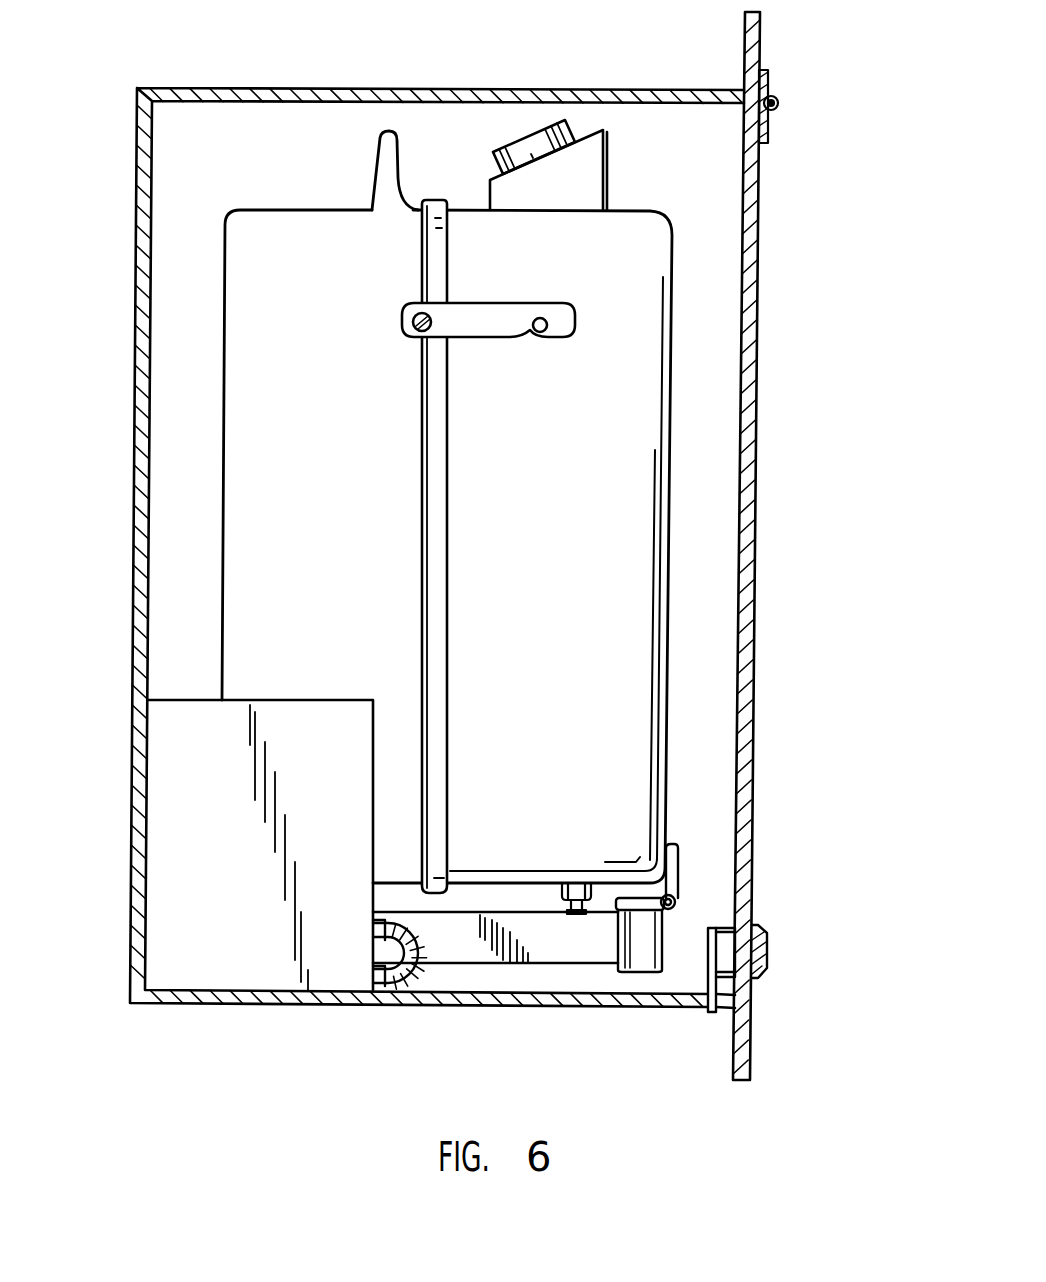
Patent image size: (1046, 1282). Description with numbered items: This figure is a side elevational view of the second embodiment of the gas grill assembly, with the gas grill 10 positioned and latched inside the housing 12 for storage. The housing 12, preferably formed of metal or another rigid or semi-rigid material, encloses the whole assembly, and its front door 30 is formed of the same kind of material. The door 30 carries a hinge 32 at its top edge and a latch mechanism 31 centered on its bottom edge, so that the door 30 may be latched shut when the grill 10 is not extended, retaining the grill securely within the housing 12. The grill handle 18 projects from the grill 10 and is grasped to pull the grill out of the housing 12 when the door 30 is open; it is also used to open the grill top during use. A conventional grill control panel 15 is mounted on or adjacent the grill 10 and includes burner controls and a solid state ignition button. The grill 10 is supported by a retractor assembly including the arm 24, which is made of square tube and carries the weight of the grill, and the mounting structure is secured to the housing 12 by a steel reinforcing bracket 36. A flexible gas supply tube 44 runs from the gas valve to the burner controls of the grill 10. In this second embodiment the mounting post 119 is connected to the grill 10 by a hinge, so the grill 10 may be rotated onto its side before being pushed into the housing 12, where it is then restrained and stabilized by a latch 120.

The gas grill 10 is at (357, 456).
The housing 12 is at (305, 88).
The grill control panel 15 is at (580, 178).
The grill handle 18 is at (387, 159).
The arm 24 is at (530, 938).
The front door 30 is at (758, 547).
The latch mechanism 31 is at (768, 948).
The hinge 32 is at (778, 103).
The reinforcing bracket 36 is at (190, 808).
The flexible gas supply tube 44 is at (417, 972).
The mounting post 119 is at (676, 901).
The latch 120 is at (477, 317).